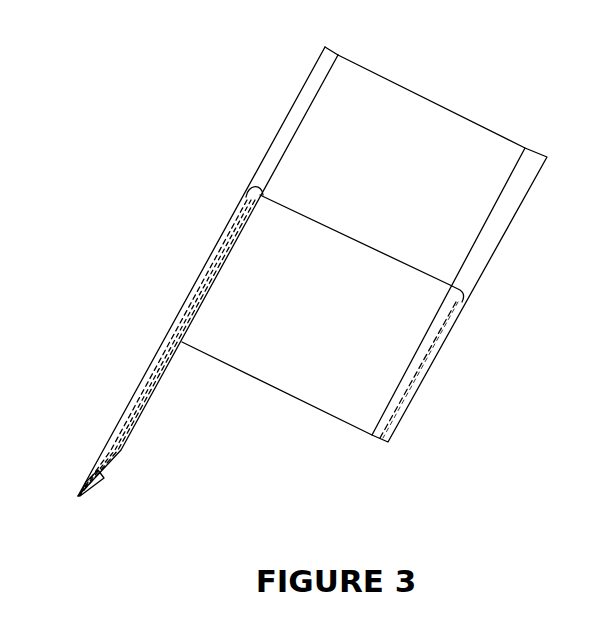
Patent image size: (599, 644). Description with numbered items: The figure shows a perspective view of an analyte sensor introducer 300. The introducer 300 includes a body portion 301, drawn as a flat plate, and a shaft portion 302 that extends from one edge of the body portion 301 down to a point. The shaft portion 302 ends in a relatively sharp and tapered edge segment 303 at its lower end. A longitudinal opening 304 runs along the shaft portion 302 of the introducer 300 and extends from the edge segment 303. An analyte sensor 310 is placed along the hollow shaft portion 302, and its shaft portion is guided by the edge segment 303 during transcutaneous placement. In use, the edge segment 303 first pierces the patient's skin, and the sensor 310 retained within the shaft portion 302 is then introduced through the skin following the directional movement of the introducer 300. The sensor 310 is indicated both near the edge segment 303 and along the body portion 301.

The introducer 300 is at (308, 547).
The body portion 301 is at (503, 237).
The shaft portion 302 is at (120, 438).
The edge segment 303 is at (90, 488).
The longitudinal opening 304 is at (162, 392).
The analyte sensor 310 is at (428, 360).